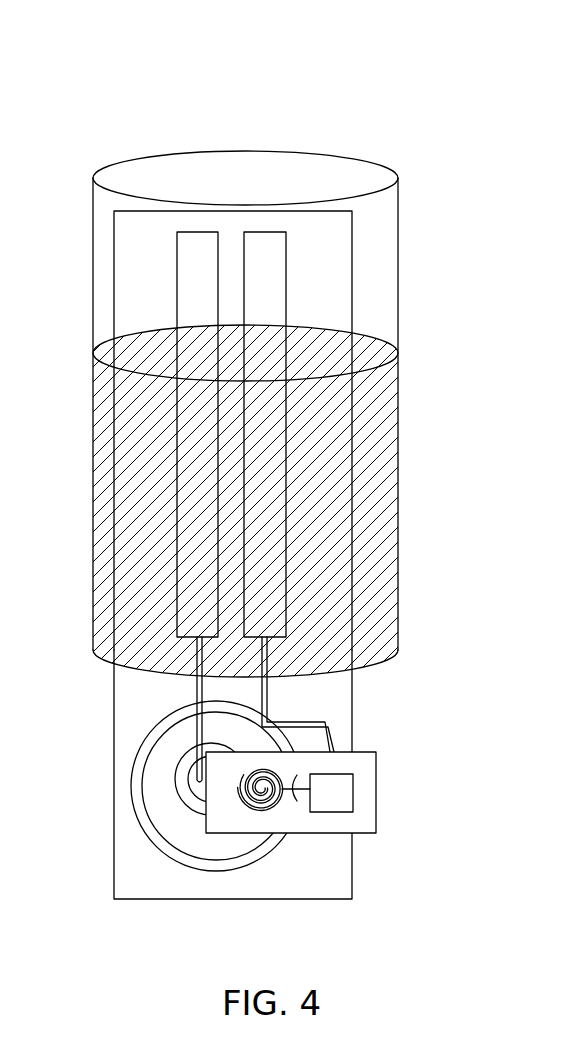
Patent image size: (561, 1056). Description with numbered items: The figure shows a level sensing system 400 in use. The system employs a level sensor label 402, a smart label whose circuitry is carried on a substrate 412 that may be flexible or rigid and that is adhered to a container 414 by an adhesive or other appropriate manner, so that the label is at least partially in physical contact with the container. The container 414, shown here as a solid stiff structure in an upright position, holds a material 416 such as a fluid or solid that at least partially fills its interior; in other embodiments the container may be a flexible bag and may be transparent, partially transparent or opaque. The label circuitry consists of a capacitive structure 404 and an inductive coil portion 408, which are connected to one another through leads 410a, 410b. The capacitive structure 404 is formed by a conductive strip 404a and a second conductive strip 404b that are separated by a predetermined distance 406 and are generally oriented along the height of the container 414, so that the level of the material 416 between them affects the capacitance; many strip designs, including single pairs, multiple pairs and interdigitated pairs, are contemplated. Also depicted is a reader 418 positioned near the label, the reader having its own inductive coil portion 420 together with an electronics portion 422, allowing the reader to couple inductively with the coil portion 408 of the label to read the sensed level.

The level sensing system 400 is at (98, 128).
The level sensor label 402 is at (432, 694).
The capacitive structure 404 is at (160, 236).
The conductive strip 404a is at (192, 290).
The conductive strip 404b is at (272, 297).
The predetermined distance 406 is at (233, 243).
The inductive coil portion 408 is at (135, 765).
The lead 410a is at (200, 700).
The lead 410b is at (265, 705).
The substrate 412 is at (112, 817).
The container 414 is at (392, 330).
The material 416 is at (393, 407).
The reader 418 is at (411, 752).
The inductive coil portion 420 is at (263, 817).
The electronics portion 422 is at (353, 787).